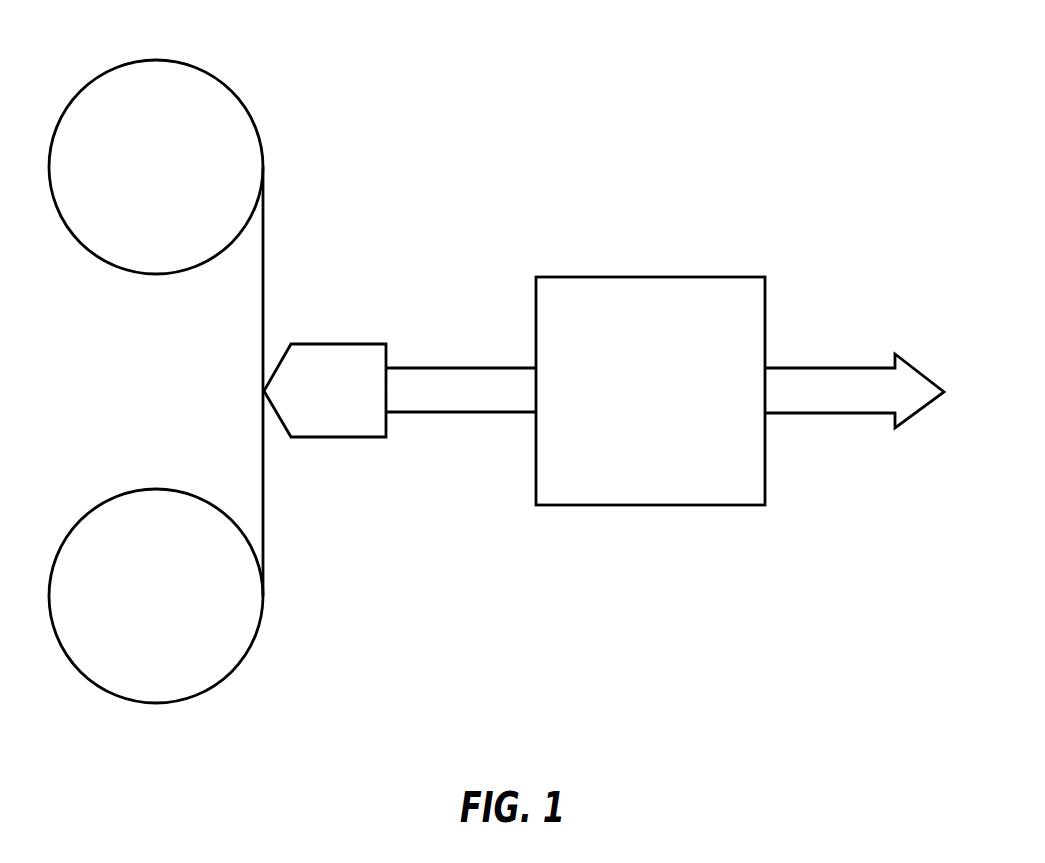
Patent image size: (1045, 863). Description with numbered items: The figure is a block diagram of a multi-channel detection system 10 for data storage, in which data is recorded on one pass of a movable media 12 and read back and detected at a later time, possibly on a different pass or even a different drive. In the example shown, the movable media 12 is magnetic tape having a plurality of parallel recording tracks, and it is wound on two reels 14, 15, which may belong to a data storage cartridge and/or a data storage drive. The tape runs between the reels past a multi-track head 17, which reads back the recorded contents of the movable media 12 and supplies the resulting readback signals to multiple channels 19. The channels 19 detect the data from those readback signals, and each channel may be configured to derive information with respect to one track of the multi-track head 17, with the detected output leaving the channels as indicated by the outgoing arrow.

The multi-channel detection system 10 is at (682, 128).
The movable media 12 is at (264, 293).
The reel 14 is at (157, 60).
The reel 15 is at (153, 705).
The multi-track head 17 is at (338, 437).
The multiple channels 19 is at (650, 505).